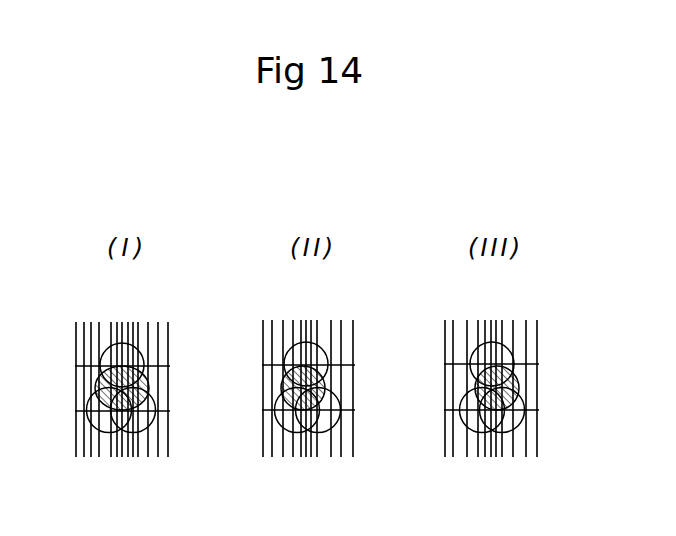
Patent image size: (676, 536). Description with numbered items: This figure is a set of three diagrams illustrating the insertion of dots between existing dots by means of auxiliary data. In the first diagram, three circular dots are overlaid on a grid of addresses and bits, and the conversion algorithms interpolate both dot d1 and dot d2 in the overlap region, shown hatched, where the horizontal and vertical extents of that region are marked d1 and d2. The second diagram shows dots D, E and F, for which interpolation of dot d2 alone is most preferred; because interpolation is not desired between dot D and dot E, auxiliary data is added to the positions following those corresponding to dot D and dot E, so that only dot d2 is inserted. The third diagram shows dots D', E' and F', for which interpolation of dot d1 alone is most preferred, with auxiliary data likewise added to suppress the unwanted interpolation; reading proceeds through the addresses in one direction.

The interpolated dot d1 is at (135, 385).
The interpolated dot d2 is at (281, 386).
The dot D is at (337, 353).
The dot E is at (343, 410).
The dot F is at (278, 420).
The dot D' is at (526, 355).
The dot E' is at (529, 410).
The dot F' is at (459, 423).